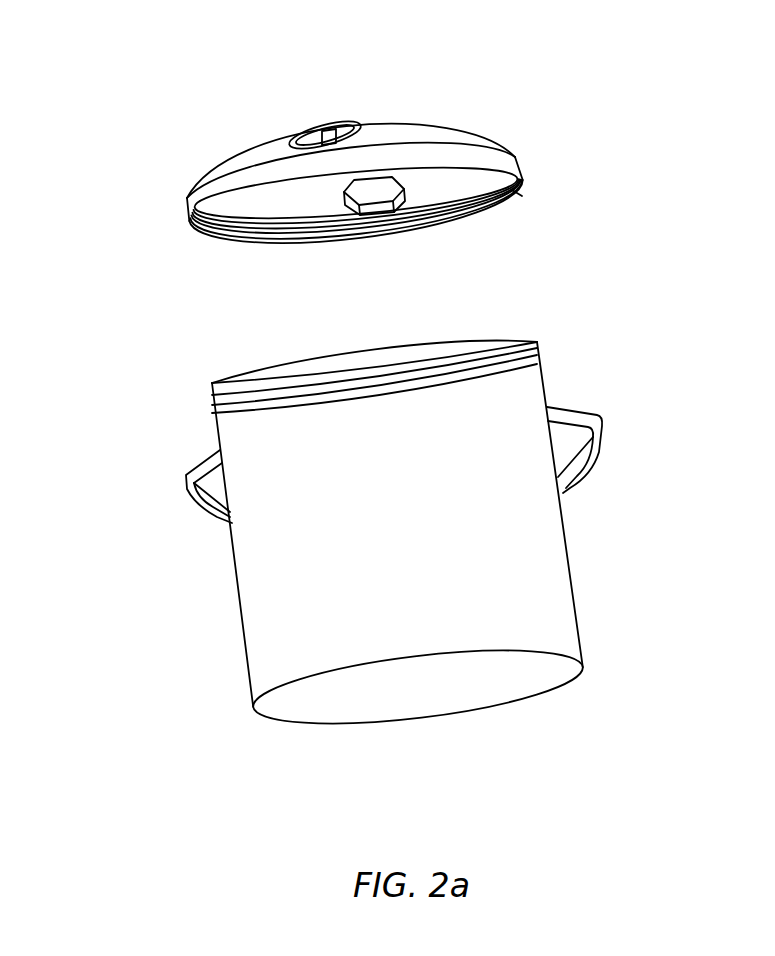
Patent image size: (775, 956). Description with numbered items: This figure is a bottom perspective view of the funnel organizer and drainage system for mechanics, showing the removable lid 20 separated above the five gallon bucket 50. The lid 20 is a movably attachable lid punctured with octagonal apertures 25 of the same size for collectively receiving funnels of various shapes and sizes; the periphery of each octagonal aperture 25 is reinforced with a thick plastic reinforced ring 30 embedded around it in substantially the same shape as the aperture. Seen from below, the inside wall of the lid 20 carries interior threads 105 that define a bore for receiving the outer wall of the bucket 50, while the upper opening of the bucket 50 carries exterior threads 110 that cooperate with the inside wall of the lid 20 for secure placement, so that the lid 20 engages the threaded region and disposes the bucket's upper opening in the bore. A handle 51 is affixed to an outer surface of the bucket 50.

The lid 20 is at (490, 160).
The octagonal aperture 25 is at (320, 138).
The reinforced ring 30 is at (361, 217).
The interior threads 105 is at (260, 242).
The exterior threads 110 is at (537, 341).
The bucket 50 is at (470, 565).
The handle 51 is at (620, 445).